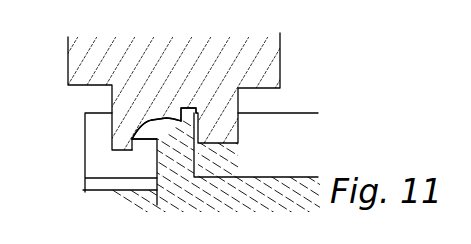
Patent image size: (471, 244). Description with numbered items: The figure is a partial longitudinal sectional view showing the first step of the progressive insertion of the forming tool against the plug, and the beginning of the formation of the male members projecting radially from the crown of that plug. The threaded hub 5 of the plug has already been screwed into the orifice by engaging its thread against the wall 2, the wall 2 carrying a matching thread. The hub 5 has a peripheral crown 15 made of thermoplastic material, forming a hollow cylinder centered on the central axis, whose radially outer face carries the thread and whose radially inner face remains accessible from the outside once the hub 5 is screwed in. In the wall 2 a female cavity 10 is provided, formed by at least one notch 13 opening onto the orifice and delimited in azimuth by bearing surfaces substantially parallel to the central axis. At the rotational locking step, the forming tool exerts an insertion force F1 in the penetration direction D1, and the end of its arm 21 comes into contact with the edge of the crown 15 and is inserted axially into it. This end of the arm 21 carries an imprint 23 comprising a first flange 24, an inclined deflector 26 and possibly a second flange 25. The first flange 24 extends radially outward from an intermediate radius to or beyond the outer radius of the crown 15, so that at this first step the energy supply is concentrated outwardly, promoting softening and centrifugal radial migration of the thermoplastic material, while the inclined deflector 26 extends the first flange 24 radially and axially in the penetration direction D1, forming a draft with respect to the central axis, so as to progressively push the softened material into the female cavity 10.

The arm 21 is at (80, 57).
The notch 13 is at (100, 160).
The female cavity 10 is at (144, 172).
The imprint 23 is at (139, 150).
The peripheral crown 15 is at (180, 162).
The wall 2 is at (102, 205).
The threaded hub 5 is at (297, 182).
The second flange 25 is at (197, 98).
The first flange 24 is at (165, 110).
The inclined deflector 26 is at (126, 113).
The insertion force F1 is at (175, 57).
The penetration direction D1 is at (340, 110).